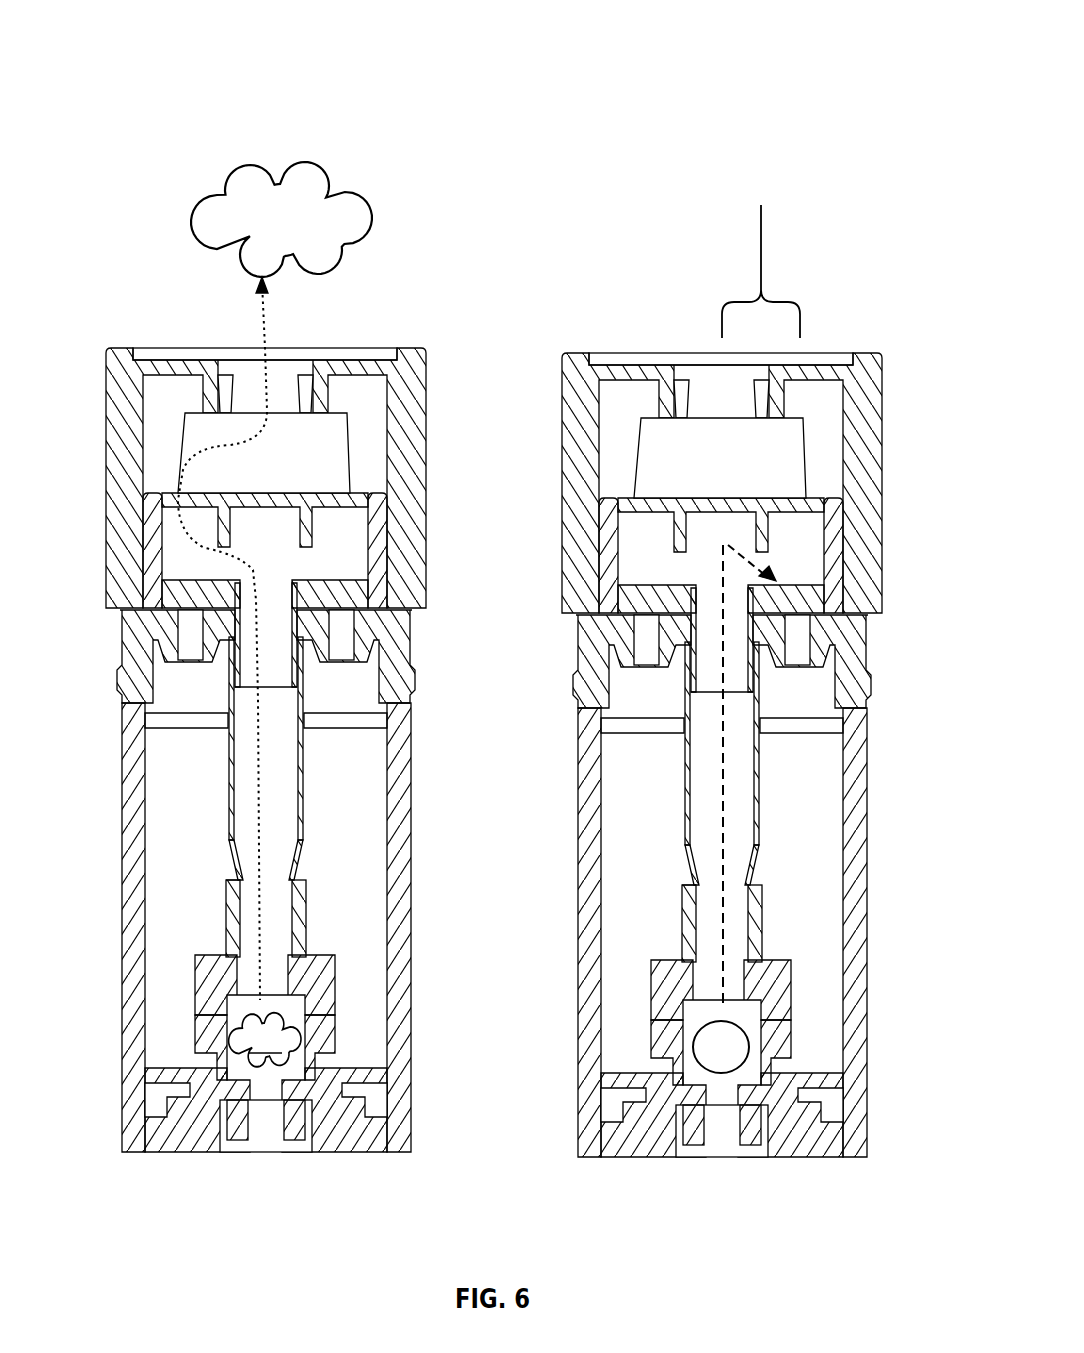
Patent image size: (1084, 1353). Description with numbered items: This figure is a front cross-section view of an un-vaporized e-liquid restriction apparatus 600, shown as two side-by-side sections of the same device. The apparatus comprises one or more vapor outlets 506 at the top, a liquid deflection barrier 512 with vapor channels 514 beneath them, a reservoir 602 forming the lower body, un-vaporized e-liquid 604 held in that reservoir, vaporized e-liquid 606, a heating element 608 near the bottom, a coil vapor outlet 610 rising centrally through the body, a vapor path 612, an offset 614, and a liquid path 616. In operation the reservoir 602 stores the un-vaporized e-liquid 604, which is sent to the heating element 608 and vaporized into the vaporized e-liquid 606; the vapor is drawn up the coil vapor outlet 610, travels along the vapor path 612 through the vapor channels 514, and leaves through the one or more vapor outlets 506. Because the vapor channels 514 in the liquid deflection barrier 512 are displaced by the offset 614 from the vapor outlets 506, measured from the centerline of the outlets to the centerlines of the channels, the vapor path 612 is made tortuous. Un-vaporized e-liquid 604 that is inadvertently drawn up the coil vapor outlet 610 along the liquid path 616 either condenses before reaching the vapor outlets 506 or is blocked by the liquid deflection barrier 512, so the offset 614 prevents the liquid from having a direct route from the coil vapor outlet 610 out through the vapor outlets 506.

The un-vaporized e-liquid restriction apparatus 600 is at (877, 58).
The vapor outlets 506 is at (677, 363).
The liquid deflection barrier 512 is at (693, 503).
The vapor channels 514 is at (798, 527).
The reservoir 602 is at (615, 807).
The un-vaporized e-liquid 604 is at (737, 1057).
The vaporized e-liquid 606 is at (299, 234).
The heating element 608 is at (658, 1028).
The coil vapor outlet 610 is at (690, 830).
The vapor path 612 is at (192, 452).
The offset 614 is at (801, 197).
The liquid path 616 is at (722, 790).